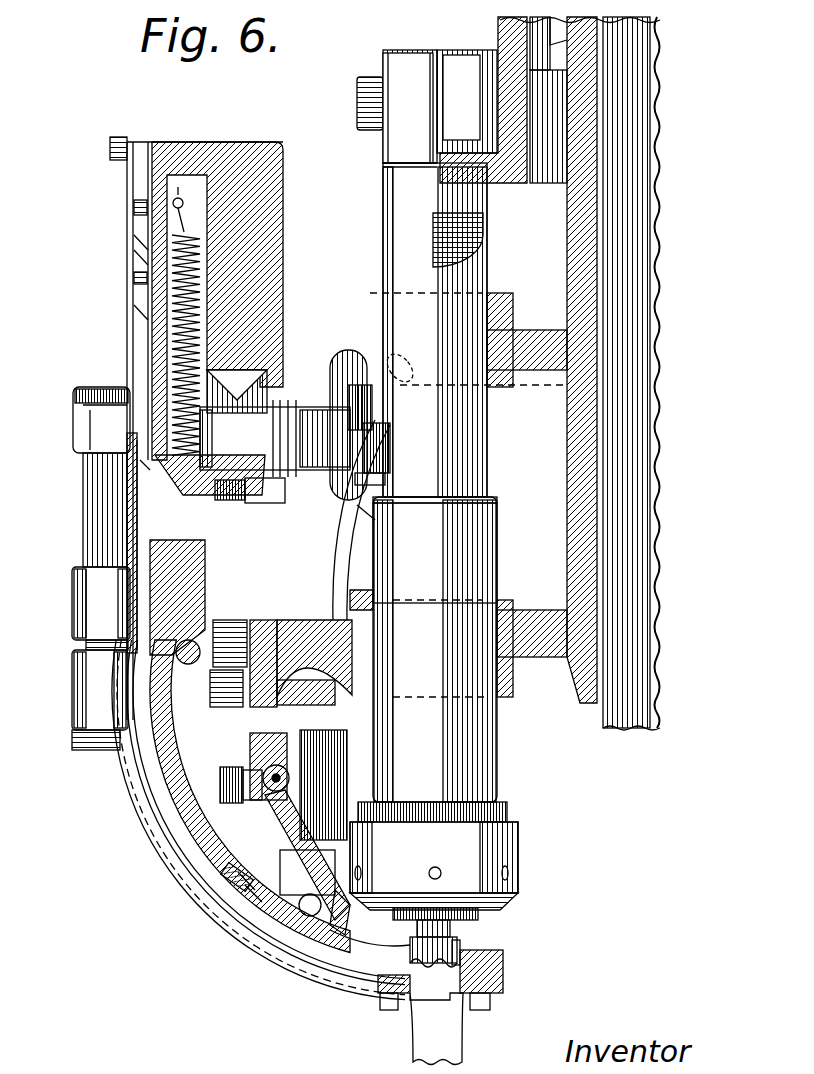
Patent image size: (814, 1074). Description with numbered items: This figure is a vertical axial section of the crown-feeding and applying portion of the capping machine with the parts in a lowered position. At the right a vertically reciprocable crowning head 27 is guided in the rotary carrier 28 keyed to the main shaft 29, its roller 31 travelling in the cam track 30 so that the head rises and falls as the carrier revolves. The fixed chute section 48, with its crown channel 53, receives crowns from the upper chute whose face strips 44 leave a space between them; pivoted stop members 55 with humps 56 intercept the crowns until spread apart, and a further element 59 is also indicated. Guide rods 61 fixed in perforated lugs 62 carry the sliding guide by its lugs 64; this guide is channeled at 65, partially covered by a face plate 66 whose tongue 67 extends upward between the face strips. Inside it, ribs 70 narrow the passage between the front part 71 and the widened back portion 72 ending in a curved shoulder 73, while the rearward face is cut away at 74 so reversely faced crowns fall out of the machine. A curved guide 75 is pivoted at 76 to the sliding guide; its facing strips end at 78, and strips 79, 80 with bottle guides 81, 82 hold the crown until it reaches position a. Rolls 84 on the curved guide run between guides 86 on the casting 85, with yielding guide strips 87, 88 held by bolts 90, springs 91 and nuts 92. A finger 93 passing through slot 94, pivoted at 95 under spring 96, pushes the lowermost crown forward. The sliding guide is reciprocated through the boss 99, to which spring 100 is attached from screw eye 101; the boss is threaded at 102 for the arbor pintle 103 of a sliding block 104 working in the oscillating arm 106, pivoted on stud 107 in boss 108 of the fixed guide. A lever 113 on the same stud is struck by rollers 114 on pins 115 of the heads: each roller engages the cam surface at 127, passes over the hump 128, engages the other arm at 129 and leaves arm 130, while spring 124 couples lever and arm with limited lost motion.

The crowning head 27 is at (497, 764).
The rotary carrier 28 is at (575, 422).
The main shaft 29 is at (654, 482).
The cam track 30 is at (492, 173).
The roller 31 is at (460, 103).
The face strips 44 is at (128, 243).
The fixed chute section 48 is at (140, 170).
The crown channel 53 is at (133, 214).
The stop members 55 is at (133, 315).
The humps 56 is at (133, 275).
The bolt head 59 is at (127, 140).
The guide rods 61 is at (90, 512).
The perforated lugs 62 is at (80, 440).
The lugs 64 is at (85, 607).
The channel 65 is at (72, 579).
The face plate 66 is at (85, 645).
The tongue 67 is at (125, 470).
The rib 70 is at (72, 390).
The front part of channel 71 is at (130, 494).
The back portion of channel 72 is at (100, 418).
The curved shoulder 73 is at (150, 480).
The sloped rearward face 74 is at (190, 605).
The curved guide 75 is at (170, 835).
The pivot 76 is at (196, 640).
The facing strip termination 78 is at (377, 964).
The strip 79 is at (390, 998).
The strip 80 is at (503, 978).
The bottle guide 81 is at (400, 985).
The bottle guide 82 is at (475, 1005).
The rolls 84 is at (285, 870).
The casting 85 is at (250, 700).
The guides 86 is at (356, 842).
The yielding guide strip 87 is at (350, 765).
The yielding guide strip 88 is at (230, 878).
The bolts 90 is at (215, 795).
The spring 91 is at (200, 786).
The nut 92 is at (220, 855).
The finger 93 is at (345, 928).
The slot 94 is at (345, 950).
The pivot 95 is at (230, 768).
The spring 96 is at (272, 797).
The boss 99 is at (222, 600).
The spring 100 is at (170, 355).
The screw eye 101 is at (180, 195).
The threaded bore 102 is at (262, 410).
The arbor pintle 103 is at (260, 495).
The sliding block 104 is at (285, 410).
The oscillating arm 106 is at (335, 540).
The stud 107 is at (372, 410).
The boss 108 is at (268, 320).
The lever 113 is at (383, 543).
The rollers 114 is at (380, 478).
The pins 115 is at (375, 437).
The spring 124 is at (380, 505).
The cam engagement point 127 is at (405, 352).
The hump 128 is at (348, 370).
The second arm engagement point 129 is at (385, 505).
The lever arm 130 is at (375, 585).
The crown position a is at (462, 944).